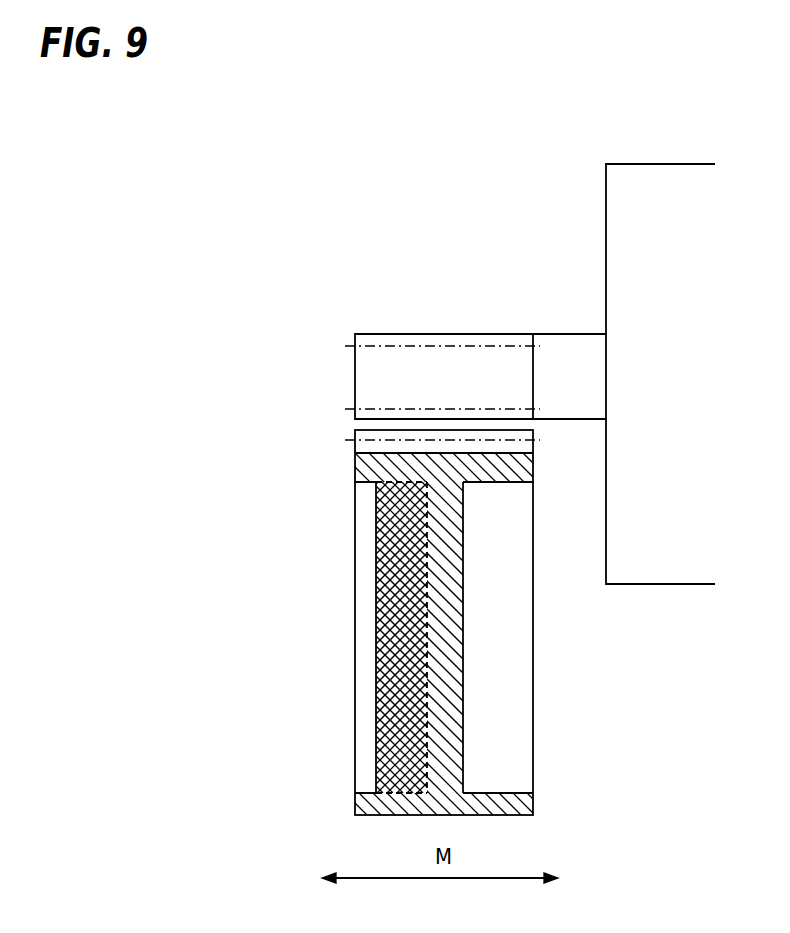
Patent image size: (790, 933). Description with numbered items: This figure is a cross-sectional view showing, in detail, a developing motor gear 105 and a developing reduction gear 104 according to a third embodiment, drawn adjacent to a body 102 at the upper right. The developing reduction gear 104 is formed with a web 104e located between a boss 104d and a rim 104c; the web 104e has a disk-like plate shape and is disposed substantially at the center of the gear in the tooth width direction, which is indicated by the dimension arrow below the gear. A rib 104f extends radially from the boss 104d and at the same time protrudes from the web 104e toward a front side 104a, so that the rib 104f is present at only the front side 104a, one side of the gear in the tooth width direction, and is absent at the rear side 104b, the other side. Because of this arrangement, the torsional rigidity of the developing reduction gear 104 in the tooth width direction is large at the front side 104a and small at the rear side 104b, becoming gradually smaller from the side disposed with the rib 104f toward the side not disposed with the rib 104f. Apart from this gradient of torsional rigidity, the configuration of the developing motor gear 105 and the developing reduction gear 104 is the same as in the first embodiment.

The housing 102 is at (606, 232).
The developing motor gear 105 is at (432, 334).
The developing reduction gear 104 is at (297, 479).
The front side 104a is at (352, 619).
The rear side 104b is at (533, 683).
The rim 104c is at (491, 482).
The boss 104d is at (488, 792).
The web 104e is at (447, 637).
The rib 104f is at (377, 728).